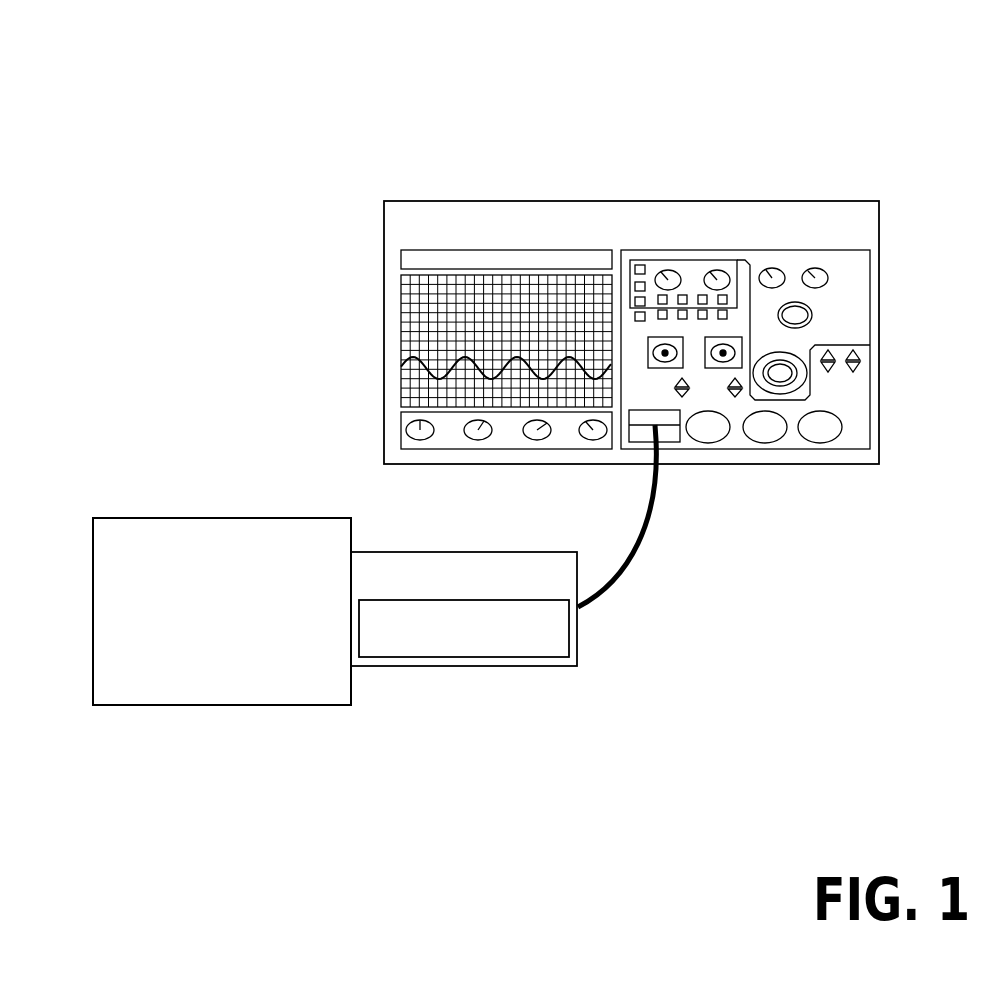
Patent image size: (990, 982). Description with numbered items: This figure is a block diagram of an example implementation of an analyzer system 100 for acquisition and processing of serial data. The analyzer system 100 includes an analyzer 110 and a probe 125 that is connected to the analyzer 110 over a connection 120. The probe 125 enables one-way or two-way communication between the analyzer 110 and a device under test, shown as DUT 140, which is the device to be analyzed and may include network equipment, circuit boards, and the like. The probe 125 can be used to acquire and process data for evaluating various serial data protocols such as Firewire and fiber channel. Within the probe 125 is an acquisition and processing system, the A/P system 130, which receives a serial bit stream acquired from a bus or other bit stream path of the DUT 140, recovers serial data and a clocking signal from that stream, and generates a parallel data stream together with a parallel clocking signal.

The analyzer system 100 is at (797, 158).
The analyzer 110 is at (543, 239).
The connection 120 is at (641, 530).
The probe 125 is at (472, 589).
The acquisition and processing (A/P) system 130 is at (552, 640).
The device under test (DUT) 140 is at (273, 624).